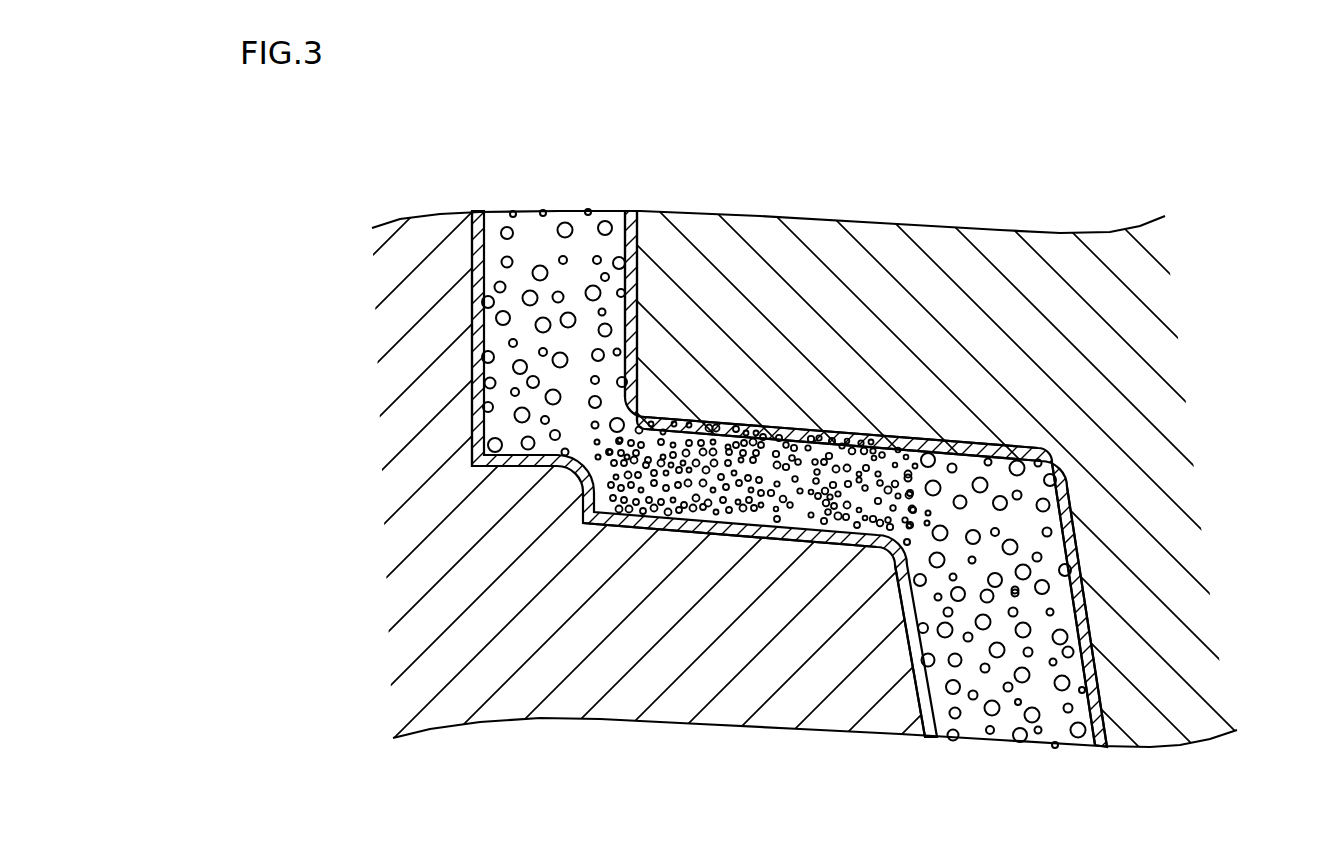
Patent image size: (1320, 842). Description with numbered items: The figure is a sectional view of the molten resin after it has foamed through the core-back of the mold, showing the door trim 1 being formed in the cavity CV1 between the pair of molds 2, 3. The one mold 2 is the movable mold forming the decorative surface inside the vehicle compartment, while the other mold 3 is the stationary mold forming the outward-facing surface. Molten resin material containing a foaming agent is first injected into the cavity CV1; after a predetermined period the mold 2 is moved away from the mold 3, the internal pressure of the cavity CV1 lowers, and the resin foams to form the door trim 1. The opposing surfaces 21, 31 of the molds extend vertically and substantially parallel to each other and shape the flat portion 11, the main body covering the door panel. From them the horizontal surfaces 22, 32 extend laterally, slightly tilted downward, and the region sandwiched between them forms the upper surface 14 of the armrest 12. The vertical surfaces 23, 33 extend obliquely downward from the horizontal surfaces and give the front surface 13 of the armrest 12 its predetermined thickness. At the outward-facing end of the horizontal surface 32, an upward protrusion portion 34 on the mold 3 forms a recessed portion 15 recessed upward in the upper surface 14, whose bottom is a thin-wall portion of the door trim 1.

The door trim 1 is at (631, 259).
The mold 2 is at (1186, 363).
The mold 3 is at (411, 538).
The flat portion 11 is at (638, 332).
The armrest 12 is at (1077, 540).
The front surface 13 is at (1093, 673).
The upper surface 14 is at (850, 430).
The recessed portion 15 is at (503, 445).
The opposing surface 21 is at (627, 293).
The horizontal surface 22 is at (913, 460).
The vertical surface 23 is at (1080, 607).
The opposing surface 31 is at (475, 247).
The horizontal surface 32 is at (758, 523).
The vertical surface 33 is at (922, 653).
The protrusion portion 34 is at (533, 447).
The cavity CV1 is at (616, 211).